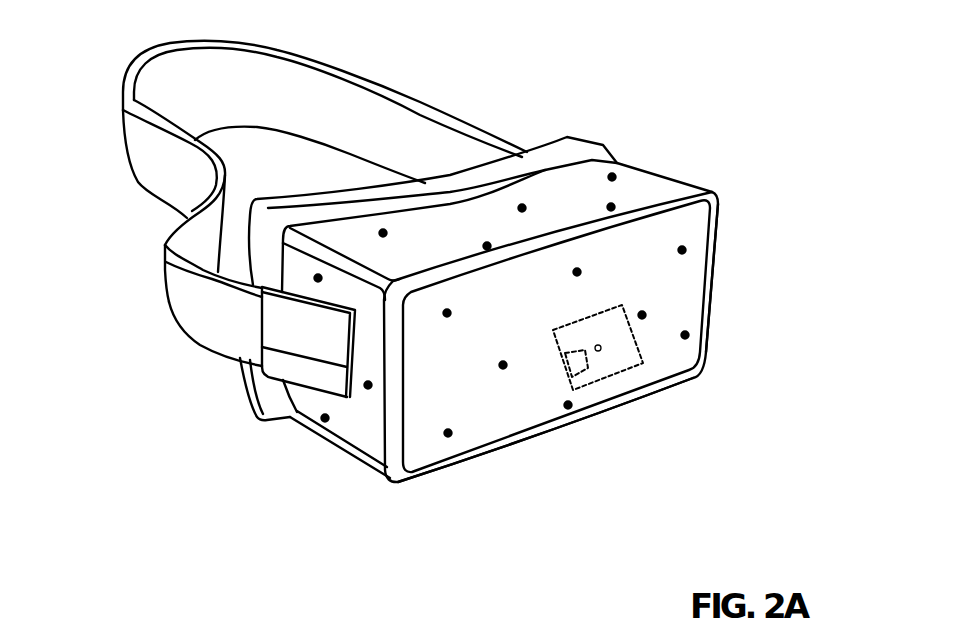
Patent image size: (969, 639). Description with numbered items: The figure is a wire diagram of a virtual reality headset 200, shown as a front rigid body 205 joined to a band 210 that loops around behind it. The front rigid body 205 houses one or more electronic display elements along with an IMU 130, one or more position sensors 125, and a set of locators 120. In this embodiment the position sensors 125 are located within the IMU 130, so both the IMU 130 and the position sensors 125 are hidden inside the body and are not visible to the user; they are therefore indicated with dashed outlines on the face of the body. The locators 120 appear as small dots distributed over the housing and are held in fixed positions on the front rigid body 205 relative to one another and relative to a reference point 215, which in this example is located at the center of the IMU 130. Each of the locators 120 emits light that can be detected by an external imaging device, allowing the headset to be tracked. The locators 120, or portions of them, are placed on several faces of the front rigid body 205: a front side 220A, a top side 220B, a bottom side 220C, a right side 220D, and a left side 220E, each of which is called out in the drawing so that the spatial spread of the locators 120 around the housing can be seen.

The VR headset 200 is at (43, 44).
The band 210 is at (427, 107).
The front rigid body 205 is at (479, 330).
The front side 220A is at (436, 453).
The top side 220B is at (360, 235).
The bottom side 220C is at (320, 455).
The right side 220D is at (360, 416).
The left side 220E is at (683, 178).
The locators 120 is at (688, 333).
The position sensors 125 is at (573, 377).
The IMU 130 is at (650, 367).
The reference point 215 is at (599, 356).